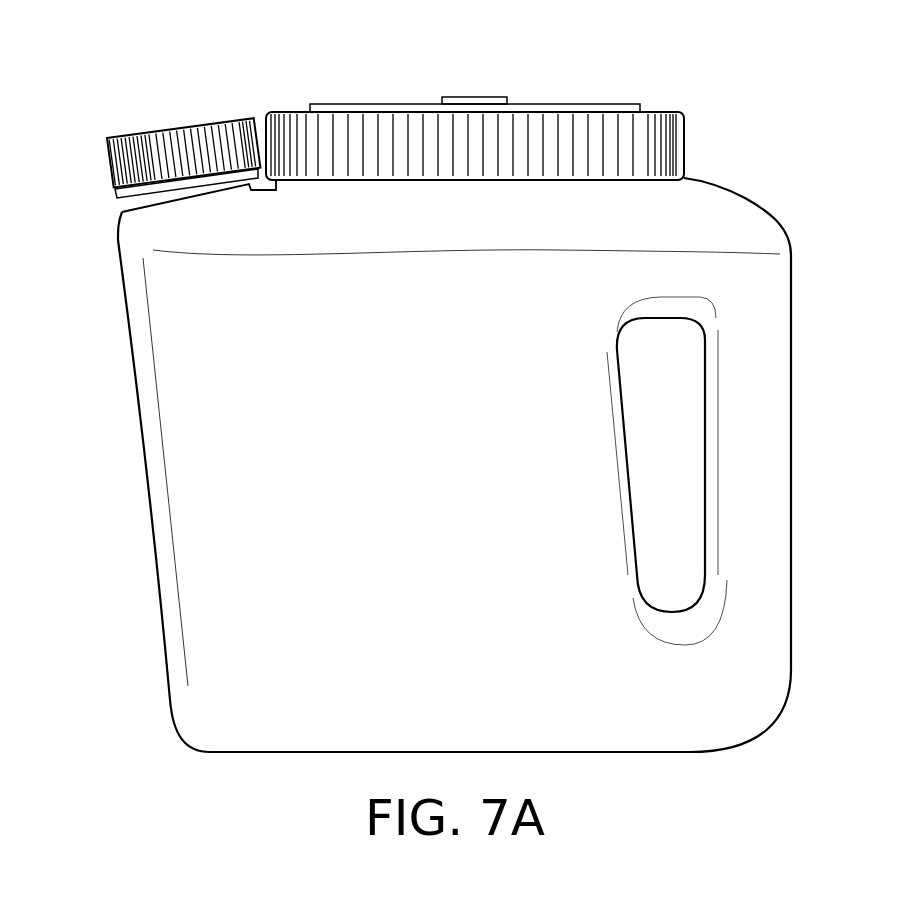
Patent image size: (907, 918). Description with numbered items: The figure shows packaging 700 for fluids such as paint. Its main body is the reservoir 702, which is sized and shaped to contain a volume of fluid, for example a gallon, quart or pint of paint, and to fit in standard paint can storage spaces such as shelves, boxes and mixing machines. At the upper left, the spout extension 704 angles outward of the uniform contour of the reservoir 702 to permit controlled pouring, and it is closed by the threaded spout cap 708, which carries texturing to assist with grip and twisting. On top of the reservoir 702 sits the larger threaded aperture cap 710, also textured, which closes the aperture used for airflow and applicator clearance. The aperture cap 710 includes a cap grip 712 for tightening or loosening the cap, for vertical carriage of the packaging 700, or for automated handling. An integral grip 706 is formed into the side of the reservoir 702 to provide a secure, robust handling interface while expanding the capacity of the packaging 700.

The packaging 700 is at (153, 90).
The reservoir 702 is at (475, 473).
The spout extension 704 is at (225, 333).
The integral grip 706 is at (768, 430).
The spout cap 708 is at (226, 142).
The aperture cap 710 is at (581, 137).
The cap grip 712 is at (464, 82).